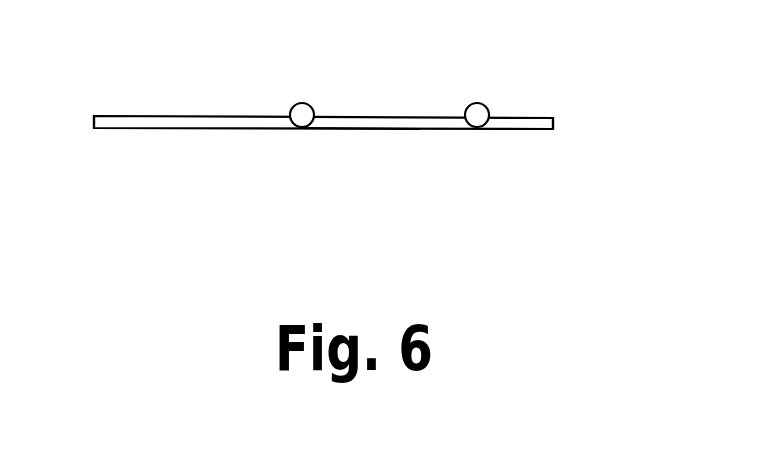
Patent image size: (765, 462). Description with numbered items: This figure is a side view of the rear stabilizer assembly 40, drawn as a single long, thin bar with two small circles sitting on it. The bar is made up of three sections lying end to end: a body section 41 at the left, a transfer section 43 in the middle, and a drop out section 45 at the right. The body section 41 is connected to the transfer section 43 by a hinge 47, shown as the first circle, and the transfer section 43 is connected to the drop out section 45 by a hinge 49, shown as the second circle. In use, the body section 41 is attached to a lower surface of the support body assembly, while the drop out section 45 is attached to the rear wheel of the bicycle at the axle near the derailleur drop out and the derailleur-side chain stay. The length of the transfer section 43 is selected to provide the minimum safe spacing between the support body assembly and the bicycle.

The rear stabilizer assembly 40 is at (353, 263).
The body section 41 is at (208, 128).
The transfer section 43 is at (415, 128).
The drop out section 45 is at (530, 129).
The hinge 47 is at (306, 99).
The hinge 49 is at (481, 101).